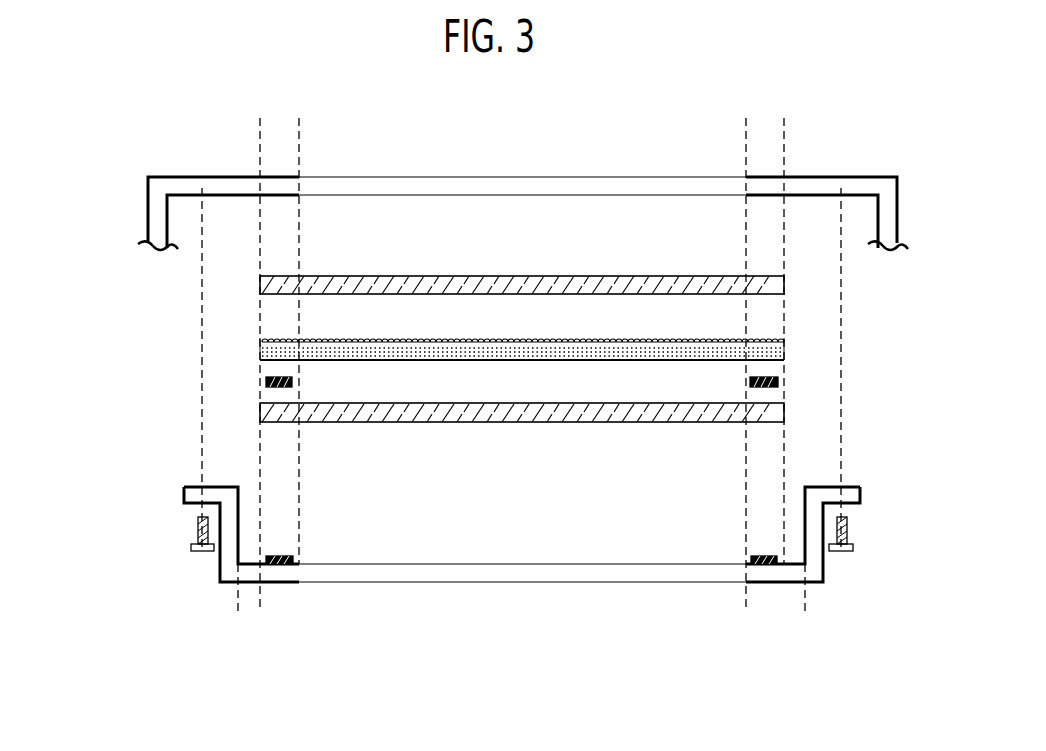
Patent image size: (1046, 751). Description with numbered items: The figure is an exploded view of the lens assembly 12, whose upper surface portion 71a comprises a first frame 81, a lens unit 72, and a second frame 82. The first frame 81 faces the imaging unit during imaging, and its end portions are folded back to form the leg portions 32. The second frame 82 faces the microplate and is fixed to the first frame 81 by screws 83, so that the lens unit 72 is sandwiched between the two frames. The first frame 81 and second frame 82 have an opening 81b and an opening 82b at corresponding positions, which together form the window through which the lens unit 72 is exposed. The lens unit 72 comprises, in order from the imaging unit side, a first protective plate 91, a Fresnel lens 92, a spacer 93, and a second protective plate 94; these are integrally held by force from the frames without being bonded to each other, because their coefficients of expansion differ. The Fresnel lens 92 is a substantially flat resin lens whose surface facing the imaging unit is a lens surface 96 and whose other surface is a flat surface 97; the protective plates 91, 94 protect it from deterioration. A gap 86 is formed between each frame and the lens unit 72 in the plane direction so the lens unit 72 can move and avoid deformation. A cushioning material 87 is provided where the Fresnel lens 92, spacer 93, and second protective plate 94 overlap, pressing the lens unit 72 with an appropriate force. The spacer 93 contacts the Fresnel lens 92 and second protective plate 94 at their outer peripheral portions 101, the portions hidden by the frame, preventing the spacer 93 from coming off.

The lens assembly 12 is at (114, 133).
The leg portions 32 is at (889, 221).
The upper surface portion 71a is at (860, 176).
The lens unit 72 is at (128, 305).
The first frame 81 is at (505, 185).
The opening 81b is at (526, 180).
The second frame 82 is at (495, 568).
The opening 82b is at (348, 576).
The screws 83 is at (203, 552).
The gap 86 is at (210, 608).
The cushioning material 87 is at (280, 556).
The first protective plate 91 is at (260, 285).
The Fresnel lens 92 is at (512, 333).
The spacer 93 is at (266, 382).
The second protective plate 94 is at (260, 412).
The lens surface 96 is at (784, 334).
The flat surface 97 is at (784, 368).
The outer peripheral portion 101 is at (299, 131).